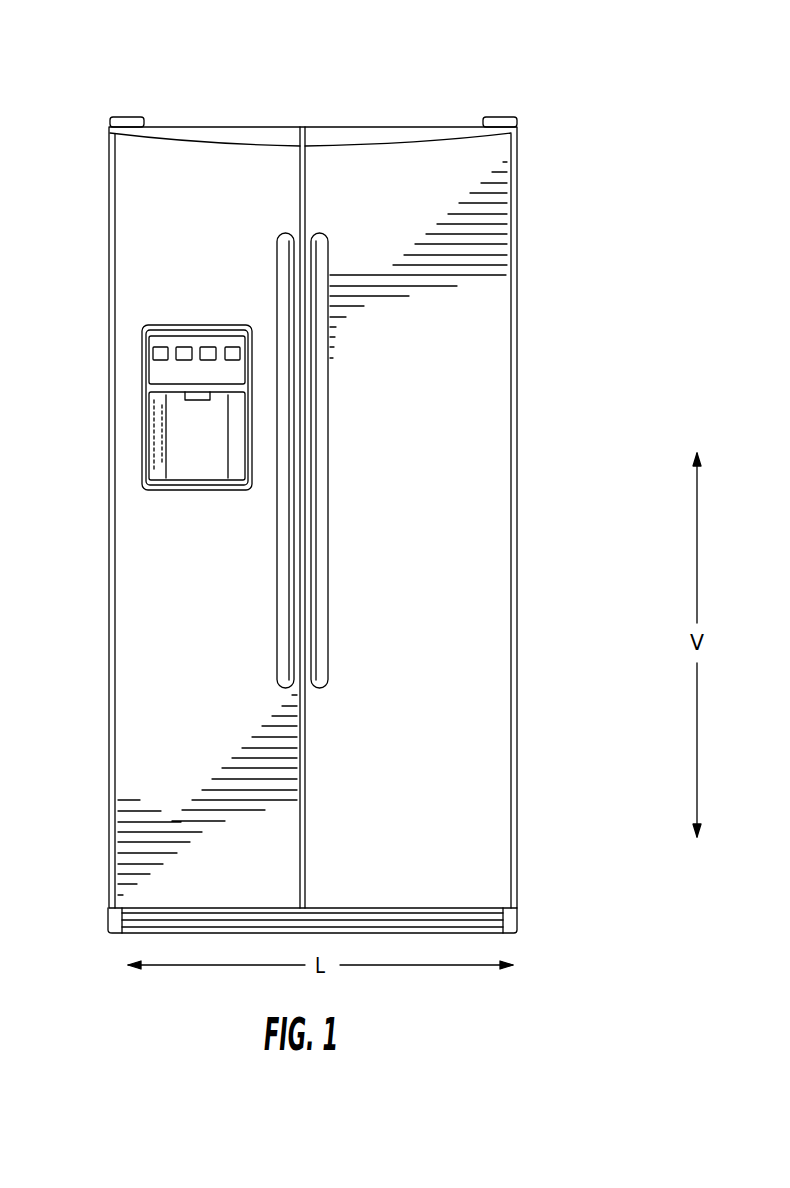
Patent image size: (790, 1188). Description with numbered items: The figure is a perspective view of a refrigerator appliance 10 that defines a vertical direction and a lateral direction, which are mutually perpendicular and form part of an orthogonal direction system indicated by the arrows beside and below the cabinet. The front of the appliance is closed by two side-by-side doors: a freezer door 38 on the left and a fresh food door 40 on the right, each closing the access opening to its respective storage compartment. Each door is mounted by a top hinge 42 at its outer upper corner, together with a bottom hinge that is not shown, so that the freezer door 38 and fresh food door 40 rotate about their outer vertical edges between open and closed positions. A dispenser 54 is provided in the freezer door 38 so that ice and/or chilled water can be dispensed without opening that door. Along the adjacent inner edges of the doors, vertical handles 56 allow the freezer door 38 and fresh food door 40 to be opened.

The refrigerator appliance 10 is at (308, 470).
The freezer door 38 is at (130, 618).
The fresh food door 40 is at (480, 594).
The top hinge 42 is at (130, 117).
The dispenser 54 is at (142, 420).
The handles 56 is at (279, 272).